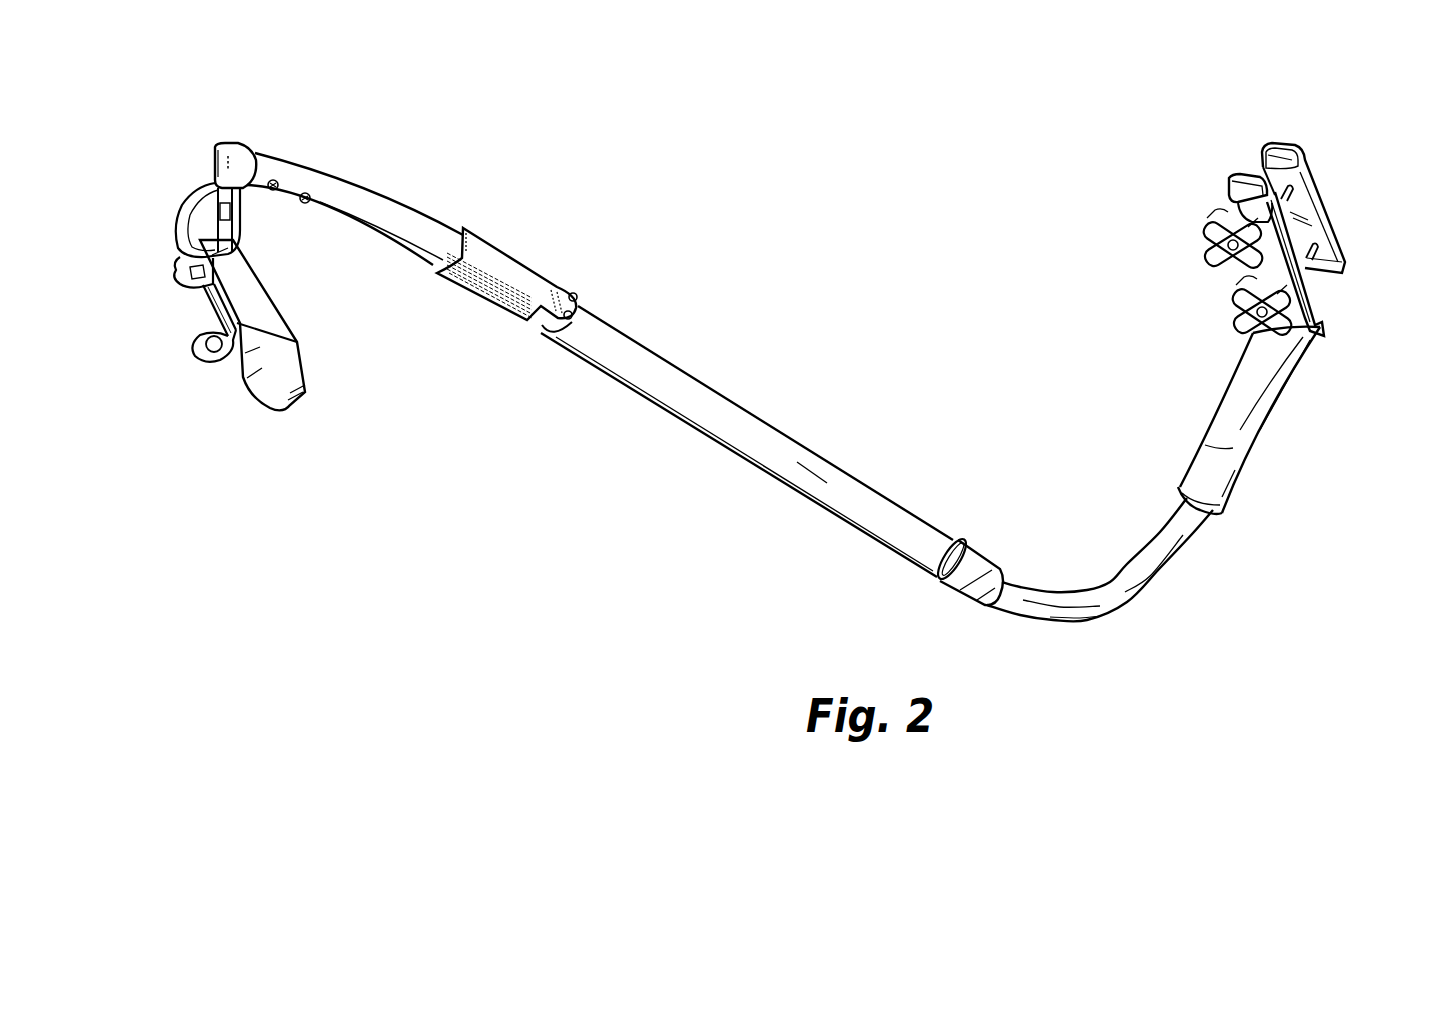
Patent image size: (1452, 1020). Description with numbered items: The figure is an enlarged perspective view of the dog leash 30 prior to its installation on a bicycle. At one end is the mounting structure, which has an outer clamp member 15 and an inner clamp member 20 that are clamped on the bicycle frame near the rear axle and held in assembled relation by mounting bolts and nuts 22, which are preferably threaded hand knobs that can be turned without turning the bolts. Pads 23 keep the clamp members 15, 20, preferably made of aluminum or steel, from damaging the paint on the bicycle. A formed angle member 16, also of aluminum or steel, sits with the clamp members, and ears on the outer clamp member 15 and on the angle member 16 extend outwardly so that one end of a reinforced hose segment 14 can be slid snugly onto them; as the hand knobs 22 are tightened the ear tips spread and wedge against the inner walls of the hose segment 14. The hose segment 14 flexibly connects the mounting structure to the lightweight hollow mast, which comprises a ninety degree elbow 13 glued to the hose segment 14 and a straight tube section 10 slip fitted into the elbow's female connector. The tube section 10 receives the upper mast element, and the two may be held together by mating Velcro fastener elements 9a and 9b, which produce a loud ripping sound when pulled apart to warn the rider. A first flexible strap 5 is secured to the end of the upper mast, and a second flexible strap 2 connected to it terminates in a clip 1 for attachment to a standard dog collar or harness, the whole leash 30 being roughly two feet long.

The clip 1 is at (193, 347).
The second flexible strap 2 is at (283, 350).
The first flexible strap 5 is at (240, 160).
The fastener element 9a is at (500, 315).
The fastener element 9b is at (520, 263).
The straight tube section 10 is at (717, 423).
The 90 degree elbow 13 is at (1123, 580).
The reinforced hose segment 14 is at (1263, 433).
The outer clamp member 15 is at (1238, 182).
The formed angle member 16 is at (1318, 280).
The inner clamp member 20 is at (1320, 217).
The nuts 22 is at (1216, 233).
The pads 23 is at (1232, 203).
The leash 30 is at (985, 115).